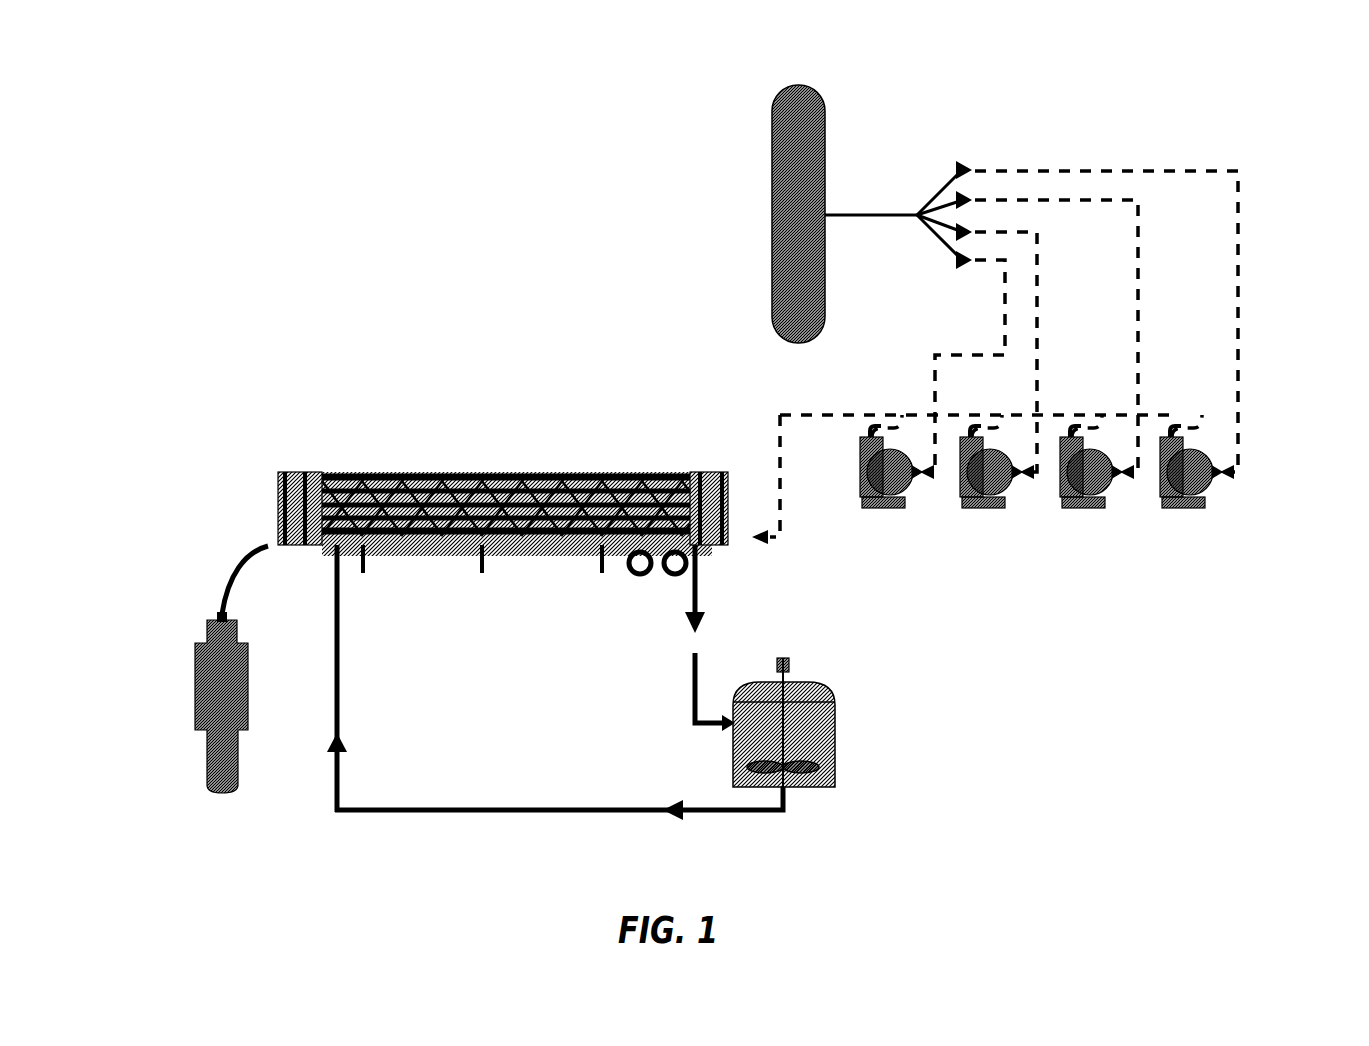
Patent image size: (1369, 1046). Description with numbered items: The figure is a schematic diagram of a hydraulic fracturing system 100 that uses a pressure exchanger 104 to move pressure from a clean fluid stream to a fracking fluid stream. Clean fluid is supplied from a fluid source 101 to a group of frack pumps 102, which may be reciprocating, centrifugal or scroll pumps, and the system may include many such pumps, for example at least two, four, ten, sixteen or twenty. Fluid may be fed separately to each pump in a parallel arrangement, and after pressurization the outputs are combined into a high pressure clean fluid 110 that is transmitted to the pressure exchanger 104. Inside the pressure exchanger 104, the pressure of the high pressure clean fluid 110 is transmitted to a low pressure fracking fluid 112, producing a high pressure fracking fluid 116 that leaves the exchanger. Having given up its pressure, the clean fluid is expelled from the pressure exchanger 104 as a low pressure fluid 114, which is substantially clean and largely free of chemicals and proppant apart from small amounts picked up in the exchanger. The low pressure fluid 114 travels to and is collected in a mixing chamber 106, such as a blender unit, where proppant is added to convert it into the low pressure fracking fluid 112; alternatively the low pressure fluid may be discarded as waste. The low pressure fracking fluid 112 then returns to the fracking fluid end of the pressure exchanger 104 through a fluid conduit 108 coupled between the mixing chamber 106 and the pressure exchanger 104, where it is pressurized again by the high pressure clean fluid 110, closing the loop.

The hydraulic fracturing system 100 is at (1220, 118).
The fluid source 101 is at (773, 200).
The frack pumps 102 is at (893, 480).
The pressure exchanger 104 is at (437, 472).
The mixing chamber 106 is at (795, 745).
The fluid conduit 108 is at (485, 810).
The high pressure clean fluid 110 is at (782, 453).
The low pressure fracking fluid 112 is at (332, 808).
The low pressure fluid 114 is at (690, 697).
The high pressure fracking fluid 116 is at (227, 573).